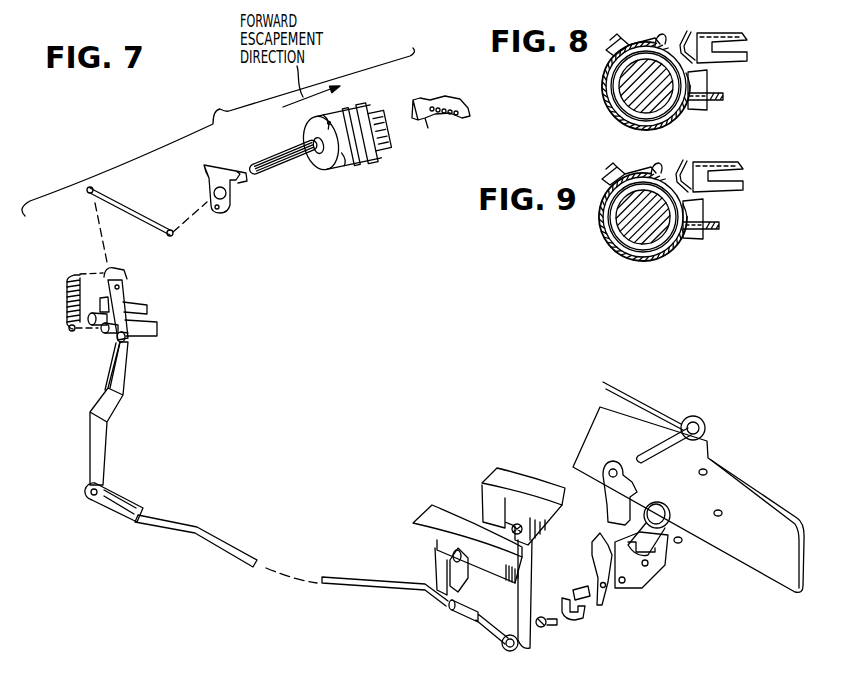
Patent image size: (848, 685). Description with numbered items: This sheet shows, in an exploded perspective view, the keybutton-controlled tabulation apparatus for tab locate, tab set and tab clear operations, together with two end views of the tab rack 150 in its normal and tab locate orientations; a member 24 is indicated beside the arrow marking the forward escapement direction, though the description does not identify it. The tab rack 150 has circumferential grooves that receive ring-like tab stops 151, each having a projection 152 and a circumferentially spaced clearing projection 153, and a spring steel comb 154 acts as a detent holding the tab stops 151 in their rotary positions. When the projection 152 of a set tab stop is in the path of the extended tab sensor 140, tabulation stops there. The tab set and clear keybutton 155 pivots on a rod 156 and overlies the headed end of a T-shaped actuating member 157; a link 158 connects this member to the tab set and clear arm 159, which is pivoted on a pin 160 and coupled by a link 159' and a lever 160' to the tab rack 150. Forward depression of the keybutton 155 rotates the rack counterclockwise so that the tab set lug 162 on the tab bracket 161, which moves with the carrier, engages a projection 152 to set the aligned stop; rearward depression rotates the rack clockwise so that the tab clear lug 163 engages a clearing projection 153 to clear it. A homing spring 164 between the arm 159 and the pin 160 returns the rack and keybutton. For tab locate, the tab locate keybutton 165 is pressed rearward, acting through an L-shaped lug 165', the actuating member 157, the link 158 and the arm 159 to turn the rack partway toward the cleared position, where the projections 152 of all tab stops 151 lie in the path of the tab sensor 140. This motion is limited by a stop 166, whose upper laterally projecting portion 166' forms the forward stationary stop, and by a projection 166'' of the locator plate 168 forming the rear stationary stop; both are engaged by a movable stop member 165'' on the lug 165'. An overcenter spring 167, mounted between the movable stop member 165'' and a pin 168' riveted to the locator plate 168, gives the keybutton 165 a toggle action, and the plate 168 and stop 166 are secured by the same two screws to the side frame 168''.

In FIG. 7, the escapement rack 24 is at (283, 108).
In FIG. 8, the tab sensor 140 is at (725, 97).
In FIG. 9, the tab sensor 140 is at (721, 225).
In FIG. 7, the tab rack 150 is at (343, 160).
In FIG. 8, the tab rack 150 is at (638, 84).
In FIG. 9, the tab rack 150 is at (632, 228).
In FIG. 7, the tab stops 151 is at (380, 110).
In FIG. 8, the tab stops 151 is at (625, 112).
In FIG. 9, the tab stops 151 is at (678, 238).
In FIG. 7, the projection 152 is at (372, 148).
In FIG. 8, the projection 152 is at (708, 80).
In FIG. 9, the projection 152 is at (705, 208).
In FIG. 8, the clearing projection 153 is at (663, 35).
In FIG. 9, the clearing projection 153 is at (670, 159).
In FIG. 7, the comb 154 is at (352, 108).
In FIG. 8, the comb 154 is at (645, 38).
In FIG. 9, the comb 154 is at (648, 167).
In FIG. 7, the tab set and clear keybutton 155 is at (520, 470).
In FIG. 7, the rod 156 is at (648, 455).
In FIG. 7, the T-shaped actuating member 157 is at (528, 607).
In FIG. 7, the link 158 is at (227, 543).
In FIG. 7, the tab set and clear arm 159 is at (124, 432).
In FIG. 7, the link 159' is at (147, 224).
In FIG. 7, the pin 160 is at (103, 318).
In FIG. 7, the lever 160' is at (225, 207).
In FIG. 7, the tab bracket 161 is at (462, 104).
In FIG. 8, the tab bracket 161 is at (744, 36).
In FIG. 9, the tab bracket 161 is at (740, 163).
In FIG. 7, the tab set lug 162 is at (427, 128).
In FIG. 8, the tab set lug 162 is at (697, 61).
In FIG. 9, the tab set lug 162 is at (693, 190).
In FIG. 7, the tab clear lug 163 is at (418, 100).
In FIG. 8, the tab clear lug 163 is at (699, 37).
In FIG. 9, the tab clear lug 163 is at (684, 158).
In FIG. 7, the homing spring 164 is at (67, 300).
In FIG. 7, the tab locate keybutton 165 is at (467, 527).
In FIG. 7, the L-shaped lug 165' is at (496, 518).
In FIG. 7, the movable stop member 165'' is at (648, 493).
In FIG. 7, the stop 166 is at (610, 585).
In FIG. 7, the upper laterally projecting portion 166' is at (577, 627).
In FIG. 7, the projection 166'' is at (677, 528).
In FIG. 7, the overcenter spring 167 is at (665, 528).
In FIG. 7, the locator plate 168 is at (648, 582).
In FIG. 7, the pin 168' is at (659, 570).
In FIG. 7, the side frame 168'' is at (701, 487).